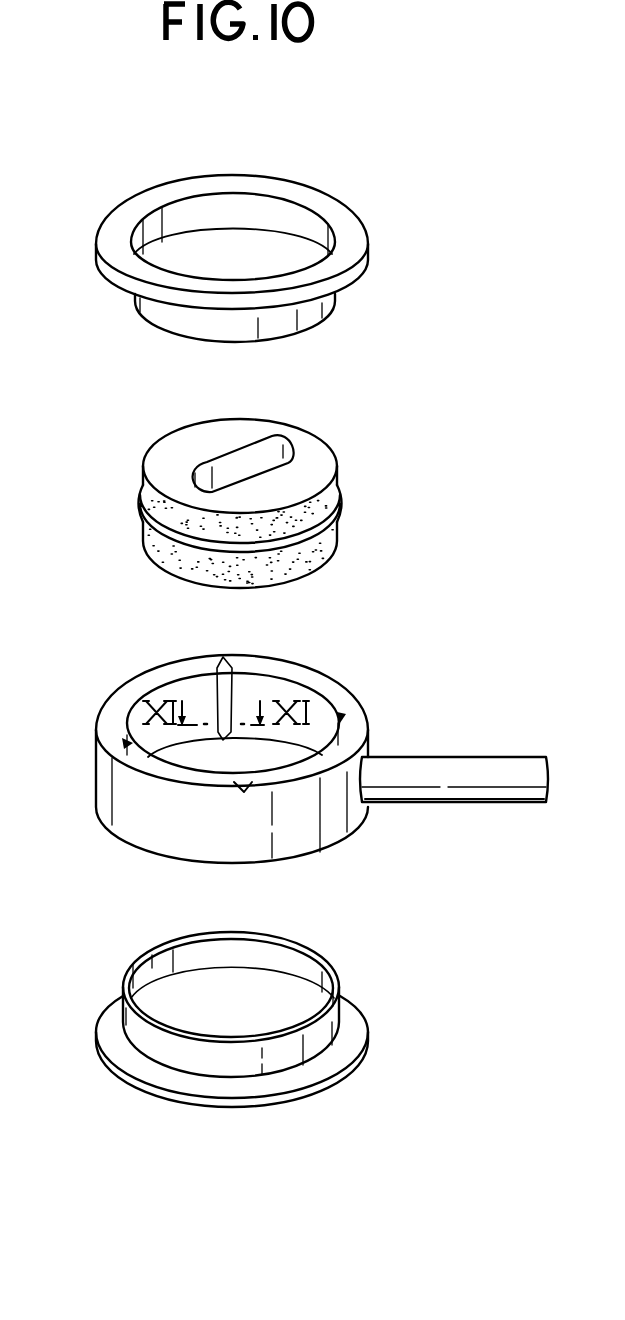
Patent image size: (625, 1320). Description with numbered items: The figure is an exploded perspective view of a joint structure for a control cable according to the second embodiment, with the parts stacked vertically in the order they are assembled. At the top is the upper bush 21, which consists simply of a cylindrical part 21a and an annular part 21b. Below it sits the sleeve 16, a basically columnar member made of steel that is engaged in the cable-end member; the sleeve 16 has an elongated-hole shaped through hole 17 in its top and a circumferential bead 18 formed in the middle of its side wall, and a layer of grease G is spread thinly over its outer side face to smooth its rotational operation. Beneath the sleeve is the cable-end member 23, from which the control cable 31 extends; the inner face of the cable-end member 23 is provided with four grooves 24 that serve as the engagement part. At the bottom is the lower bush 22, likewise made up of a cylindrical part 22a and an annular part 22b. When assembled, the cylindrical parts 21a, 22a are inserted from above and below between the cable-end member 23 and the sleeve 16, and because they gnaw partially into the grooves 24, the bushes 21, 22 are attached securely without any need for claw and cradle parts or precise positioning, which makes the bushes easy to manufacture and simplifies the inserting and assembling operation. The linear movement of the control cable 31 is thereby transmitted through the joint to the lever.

The bush 21 is at (280, 253).
The cylindrical part 21a is at (307, 318).
The annular part 21b is at (348, 255).
The sleeve 16 is at (257, 497).
The through hole 17 is at (213, 467).
The circumferential bead 18 is at (343, 500).
The grease G is at (158, 557).
The cable-end member 23 is at (282, 753).
The groove 24 is at (226, 658).
The control cable 31 is at (506, 757).
The bush 22 is at (289, 1048).
The cylindrical part 22a is at (232, 1060).
The annular part 22b is at (313, 1073).